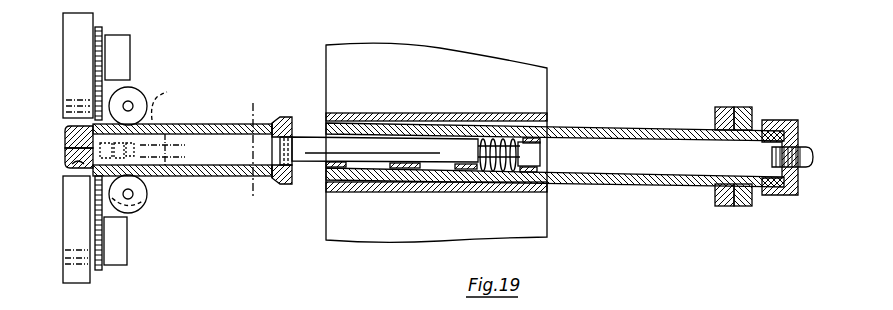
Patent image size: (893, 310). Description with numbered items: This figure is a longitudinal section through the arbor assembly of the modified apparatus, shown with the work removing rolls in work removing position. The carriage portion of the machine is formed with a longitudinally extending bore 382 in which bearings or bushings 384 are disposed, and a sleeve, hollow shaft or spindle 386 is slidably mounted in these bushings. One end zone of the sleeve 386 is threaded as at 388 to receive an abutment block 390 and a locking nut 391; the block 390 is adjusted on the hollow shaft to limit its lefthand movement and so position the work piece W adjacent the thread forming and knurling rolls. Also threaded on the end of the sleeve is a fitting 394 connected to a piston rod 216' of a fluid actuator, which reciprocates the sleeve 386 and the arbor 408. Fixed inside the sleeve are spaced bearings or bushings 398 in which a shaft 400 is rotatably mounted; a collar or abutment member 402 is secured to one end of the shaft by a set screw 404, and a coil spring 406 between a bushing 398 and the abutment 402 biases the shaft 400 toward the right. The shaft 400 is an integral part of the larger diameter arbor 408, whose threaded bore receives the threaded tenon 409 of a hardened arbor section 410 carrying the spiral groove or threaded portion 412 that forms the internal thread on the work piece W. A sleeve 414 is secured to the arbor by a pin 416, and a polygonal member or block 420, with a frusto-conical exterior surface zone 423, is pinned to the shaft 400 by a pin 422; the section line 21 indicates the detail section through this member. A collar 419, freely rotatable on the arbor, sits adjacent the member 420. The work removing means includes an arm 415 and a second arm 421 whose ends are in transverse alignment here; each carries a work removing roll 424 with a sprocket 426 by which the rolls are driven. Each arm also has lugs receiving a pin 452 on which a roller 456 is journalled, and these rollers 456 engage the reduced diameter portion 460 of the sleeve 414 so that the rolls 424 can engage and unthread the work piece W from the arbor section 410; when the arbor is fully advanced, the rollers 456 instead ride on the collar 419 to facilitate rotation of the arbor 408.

The section line 21 is at (258, 108).
The piston rod 216' is at (795, 183).
The longitudinally extending bore 382 is at (505, 88).
The bearings or bushings 384 is at (352, 122).
The sleeve, hollow shaft or spindle 386 is at (672, 186).
The threaded end zone 388 is at (756, 224).
The abutment block 390 is at (722, 107).
The locking nut 391 is at (742, 107).
The fitting 394 is at (770, 120).
The bearings or bushings 398 is at (340, 180).
The shaft 400 is at (424, 150).
The collar or abutment member 402 is at (541, 154).
The set screw 404 is at (541, 141).
The coil spring 406 is at (470, 176).
The arbor 408 is at (196, 180).
The threaded tenon 409 is at (176, 101).
The hardened member or arbor section 410 is at (78, 143).
The spiral groove or threaded portion 412 is at (68, 172).
The sleeve 414 is at (205, 180).
The arm 415 is at (127, 255).
The pin 416 is at (170, 148).
The collar 419 is at (281, 117).
The member or block 420 is at (292, 122).
The second arm 421 is at (125, 35).
The pin 422 is at (294, 135).
The exterior periphery or surface zone 423 is at (286, 124).
The work removing roll 424 is at (85, 13).
The sprocket 426 is at (98, 27).
The pin 452 is at (133, 103).
The roller 456 is at (137, 90).
The reduced diameter portion 460 is at (118, 208).
The work piece W is at (56, 164).